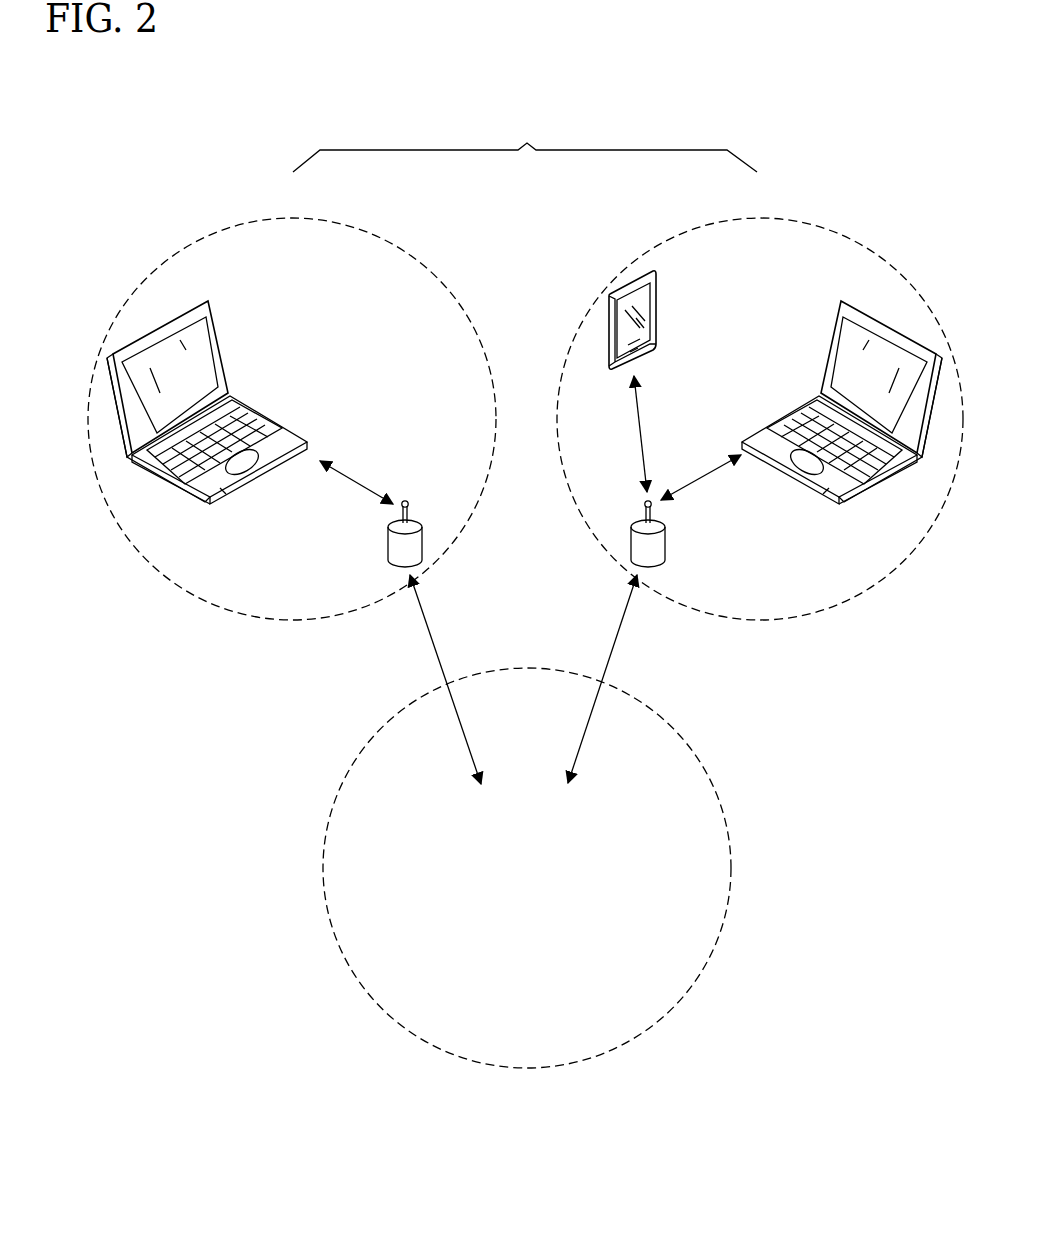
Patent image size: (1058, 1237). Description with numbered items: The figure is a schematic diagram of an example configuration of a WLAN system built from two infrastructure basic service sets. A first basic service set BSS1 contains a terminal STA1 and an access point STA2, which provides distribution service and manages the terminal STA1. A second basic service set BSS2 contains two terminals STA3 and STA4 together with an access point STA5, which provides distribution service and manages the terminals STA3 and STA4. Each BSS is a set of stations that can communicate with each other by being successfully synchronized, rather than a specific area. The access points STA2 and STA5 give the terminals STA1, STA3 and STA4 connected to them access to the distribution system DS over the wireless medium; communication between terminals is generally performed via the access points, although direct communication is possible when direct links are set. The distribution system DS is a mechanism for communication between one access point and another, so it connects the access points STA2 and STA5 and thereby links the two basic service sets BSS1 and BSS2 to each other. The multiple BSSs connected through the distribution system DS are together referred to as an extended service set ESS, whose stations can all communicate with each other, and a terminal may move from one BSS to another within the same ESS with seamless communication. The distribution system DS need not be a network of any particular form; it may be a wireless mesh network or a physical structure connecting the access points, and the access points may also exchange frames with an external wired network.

The extended service set ESS is at (525, 138).
The basic service set 1 BSS1 is at (292, 396).
The basic service set 2 BSS2 is at (760, 396).
The terminal STA1 is at (213, 402).
The access point (AP 1) STA2 is at (360, 537).
The terminal STA3 is at (675, 320).
The terminal STA4 is at (842, 420).
The access point (AP 2) STA5 is at (697, 537).
The distribution system DS is at (527, 868).